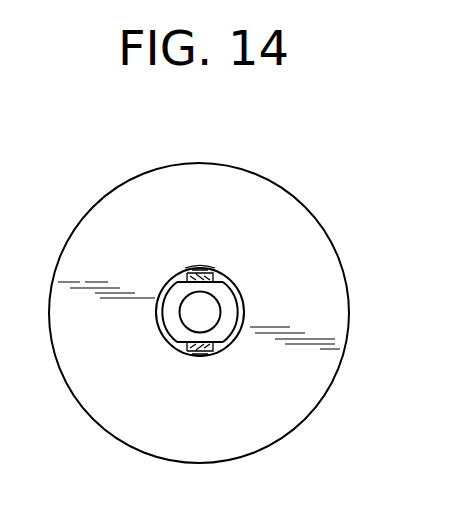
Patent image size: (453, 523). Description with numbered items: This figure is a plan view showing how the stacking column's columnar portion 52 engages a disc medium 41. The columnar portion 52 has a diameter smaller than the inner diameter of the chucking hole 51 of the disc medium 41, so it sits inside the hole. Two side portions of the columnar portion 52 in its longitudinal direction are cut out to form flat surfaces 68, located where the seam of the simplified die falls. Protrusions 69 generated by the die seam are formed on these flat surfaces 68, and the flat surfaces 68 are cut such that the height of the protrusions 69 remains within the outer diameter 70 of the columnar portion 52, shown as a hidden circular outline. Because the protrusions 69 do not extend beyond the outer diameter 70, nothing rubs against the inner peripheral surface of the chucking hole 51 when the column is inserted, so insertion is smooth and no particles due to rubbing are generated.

The disc medium 41 is at (303, 251).
The chucking hole 51 is at (163, 292).
The columnar portion 52 is at (229, 311).
The flat surfaces 68 is at (212, 280).
The protrusions 69 is at (216, 278).
The outer diameter 70 is at (185, 268).